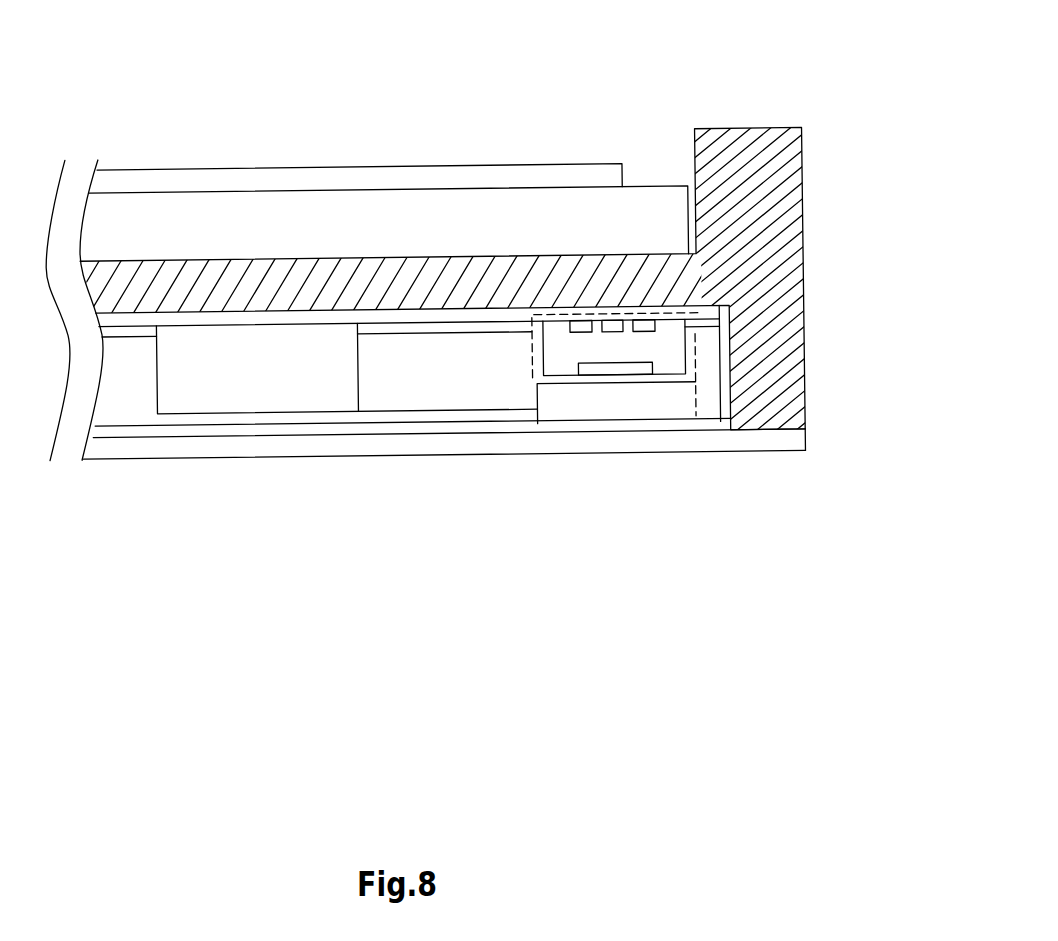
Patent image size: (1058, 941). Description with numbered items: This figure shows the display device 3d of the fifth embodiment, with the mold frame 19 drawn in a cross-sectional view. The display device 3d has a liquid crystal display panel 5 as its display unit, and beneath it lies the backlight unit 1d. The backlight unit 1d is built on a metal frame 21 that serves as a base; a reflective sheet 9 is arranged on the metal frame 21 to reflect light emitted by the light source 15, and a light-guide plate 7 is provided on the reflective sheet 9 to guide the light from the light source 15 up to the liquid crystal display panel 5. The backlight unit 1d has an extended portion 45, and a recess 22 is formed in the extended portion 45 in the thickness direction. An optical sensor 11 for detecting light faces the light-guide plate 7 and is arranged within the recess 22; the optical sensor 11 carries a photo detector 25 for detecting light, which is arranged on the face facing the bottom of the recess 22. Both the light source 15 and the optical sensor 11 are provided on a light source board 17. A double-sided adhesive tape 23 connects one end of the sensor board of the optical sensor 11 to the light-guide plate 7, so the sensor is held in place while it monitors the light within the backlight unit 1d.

The liquid crystal display panel 5 is at (220, 181).
The light-guide plate 7 is at (132, 400).
The reflective sheet 9 is at (108, 428).
The optical sensor 11 is at (570, 368).
The light source 15 is at (305, 407).
The light source board 17 is at (517, 320).
The mold frame 19 is at (802, 160).
The metal frame 21 is at (800, 438).
The recess 22 is at (700, 347).
The double-sided adhesive tape 23 is at (527, 323).
The photo detector 25 is at (628, 370).
The extended portion 45 is at (687, 405).
The display device 3d is at (827, 89).
The backlight unit 1d is at (347, 573).